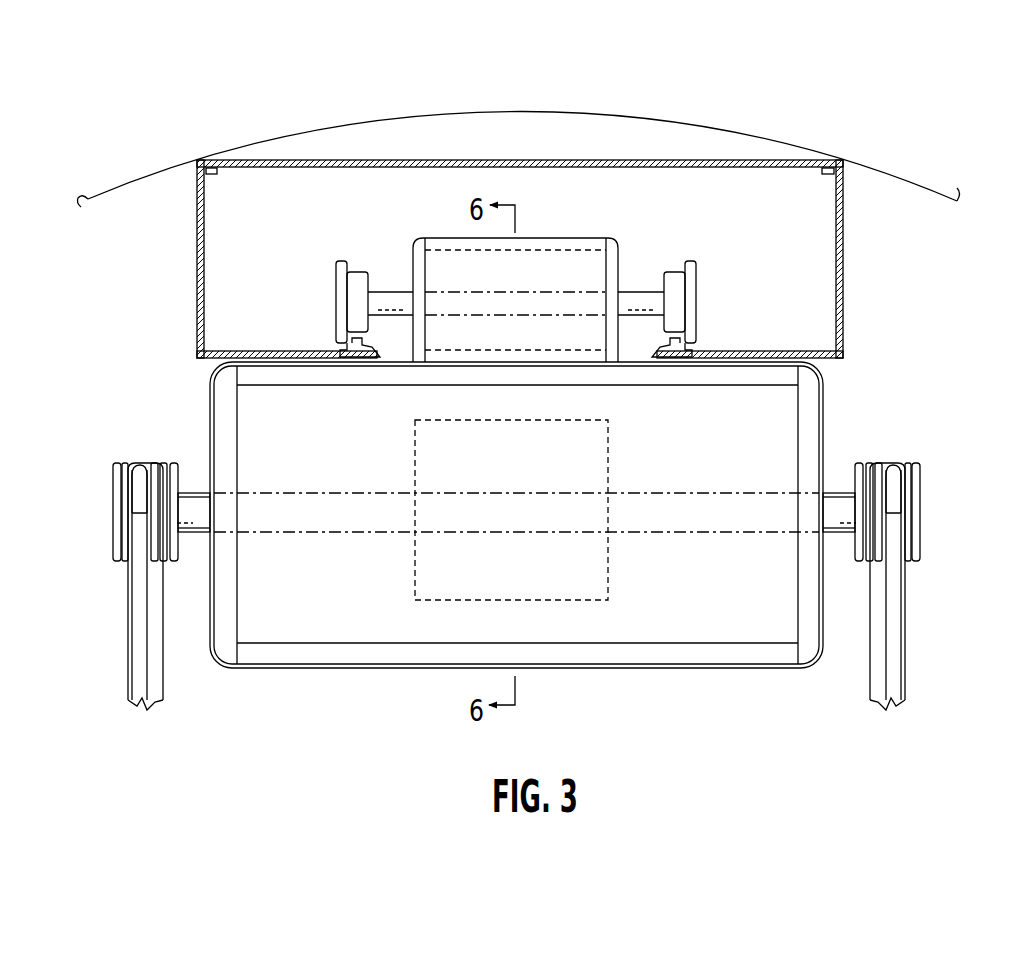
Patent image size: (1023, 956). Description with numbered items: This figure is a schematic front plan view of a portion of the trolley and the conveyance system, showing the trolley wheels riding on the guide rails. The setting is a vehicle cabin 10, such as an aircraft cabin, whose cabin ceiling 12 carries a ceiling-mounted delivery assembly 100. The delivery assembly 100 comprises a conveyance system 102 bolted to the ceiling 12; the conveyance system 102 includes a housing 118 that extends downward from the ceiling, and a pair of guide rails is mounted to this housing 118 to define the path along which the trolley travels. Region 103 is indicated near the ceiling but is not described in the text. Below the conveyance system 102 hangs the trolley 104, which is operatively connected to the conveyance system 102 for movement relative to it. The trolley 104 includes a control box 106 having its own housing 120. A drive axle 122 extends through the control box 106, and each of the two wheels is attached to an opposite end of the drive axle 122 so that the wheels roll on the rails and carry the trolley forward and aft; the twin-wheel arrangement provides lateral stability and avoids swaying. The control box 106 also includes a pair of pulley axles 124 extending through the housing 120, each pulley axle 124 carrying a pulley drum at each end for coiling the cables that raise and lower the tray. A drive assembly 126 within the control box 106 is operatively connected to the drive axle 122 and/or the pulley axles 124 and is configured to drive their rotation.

The vehicle cabin 10 is at (780, 128).
The cabin ceiling 12 is at (604, 111).
The ceiling-mounted delivery assembly 100 is at (884, 123).
The conveyance system 102 is at (858, 255).
The canopy mounting region 103 is at (138, 216).
The trolley 104 is at (935, 420).
The control box 106 is at (838, 415).
The housing 118 is at (842, 308).
The housing 120 is at (823, 635).
The drive axle 122 is at (545, 292).
The pulley axles 124 is at (318, 533).
The drive assembly 126 is at (617, 604).